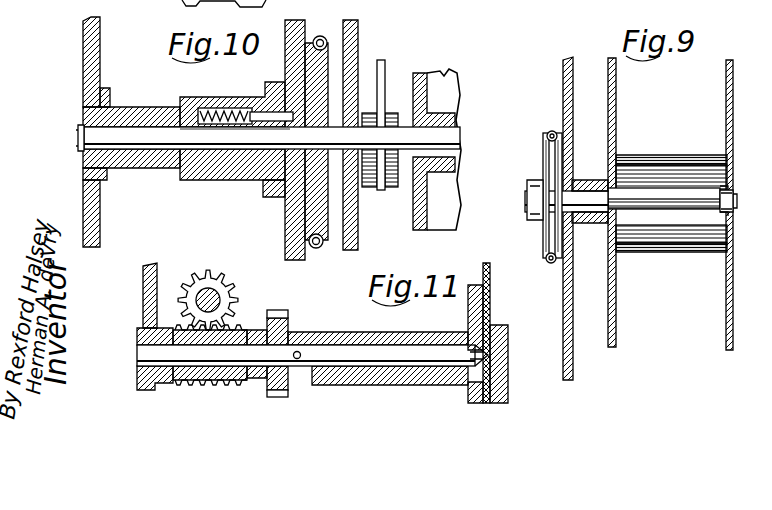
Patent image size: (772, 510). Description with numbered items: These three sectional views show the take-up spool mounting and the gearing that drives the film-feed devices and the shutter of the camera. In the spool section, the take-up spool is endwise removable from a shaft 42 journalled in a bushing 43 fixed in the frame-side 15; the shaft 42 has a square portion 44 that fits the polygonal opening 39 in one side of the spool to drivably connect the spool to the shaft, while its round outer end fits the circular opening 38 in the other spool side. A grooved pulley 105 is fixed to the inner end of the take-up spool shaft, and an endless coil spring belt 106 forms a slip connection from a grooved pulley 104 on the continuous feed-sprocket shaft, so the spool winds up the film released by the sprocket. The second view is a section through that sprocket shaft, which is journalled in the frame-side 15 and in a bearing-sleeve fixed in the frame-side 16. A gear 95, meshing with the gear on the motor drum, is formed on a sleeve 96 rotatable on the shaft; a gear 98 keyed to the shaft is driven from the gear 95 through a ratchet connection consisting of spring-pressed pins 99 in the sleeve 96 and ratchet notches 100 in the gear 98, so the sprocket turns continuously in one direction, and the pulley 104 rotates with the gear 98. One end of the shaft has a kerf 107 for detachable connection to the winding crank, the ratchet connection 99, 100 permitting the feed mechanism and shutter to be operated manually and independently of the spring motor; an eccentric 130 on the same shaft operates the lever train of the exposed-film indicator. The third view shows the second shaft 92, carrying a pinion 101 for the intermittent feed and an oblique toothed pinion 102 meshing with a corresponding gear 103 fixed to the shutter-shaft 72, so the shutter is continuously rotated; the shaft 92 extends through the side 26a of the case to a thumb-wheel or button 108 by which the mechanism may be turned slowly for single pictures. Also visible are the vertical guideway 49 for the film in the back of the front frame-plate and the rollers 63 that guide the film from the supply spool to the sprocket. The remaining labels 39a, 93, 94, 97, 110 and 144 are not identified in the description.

In FIG. 10, the frame-side 15 is at (358, 58).
In FIG. 9, the frame-side 15 is at (574, 372).
In FIG. 10, the frame-side 16 is at (83, 48).
In FIG. 11, the frame-side 16 is at (491, 296).
In FIG. 11, the side of the case 26a is at (484, 315).
In FIG. 9, the circular opening 38 is at (729, 192).
In FIG. 9, the polygonal opening 39 is at (612, 165).
In FIG. 9, the spool flange 39a is at (726, 100).
In FIG. 9, the shaft 42 is at (592, 225).
In FIG. 9, the bushing 43 is at (586, 178).
In FIG. 9, the square portion 44 is at (672, 212).
In FIG. 10, the guideway 49 is at (164, 0).
In FIG. 10, the rollers 63 is at (390, 0).
In FIG. 11, the shutter-shaft 72 is at (218, 293).
In FIG. 11, the shaft 92 is at (328, 352).
In FIG. 9, the pin 93 is at (737, 197).
In FIG. 11, the frame plate 94 is at (158, 272).
In FIG. 10, the gear 95 is at (268, 198).
In FIG. 10, the sleeve 96 is at (426, 80).
In FIG. 10, the shaft 97 is at (452, 144).
In FIG. 10, the gear 98 is at (124, 108).
In FIG. 10, the spring-pressed pins 99 is at (259, 110).
In FIG. 10, the ratchet notches 100 is at (330, 93).
In FIG. 11, the pinion 101 is at (284, 320).
In FIG. 11, the oblique toothed pinion 102 is at (236, 327).
In FIG. 11, the gear 103 is at (236, 293).
In FIG. 10, the grooved pulley 104 is at (320, 216).
In FIG. 9, the grooved pulley 105 is at (548, 166).
In FIG. 10, the endless coil spring belt 106 is at (323, 247).
In FIG. 9, the endless coil spring belt 106 is at (546, 259).
In FIG. 10, the kerf 107 is at (78, 134).
In FIG. 11, the thumb-wheel or button 108 is at (509, 397).
In FIG. 10, the gear 110 is at (150, 0).
In FIG. 10, the eccentric 130 is at (387, 110).
In FIG. 10, the gear 144 is at (238, 7).